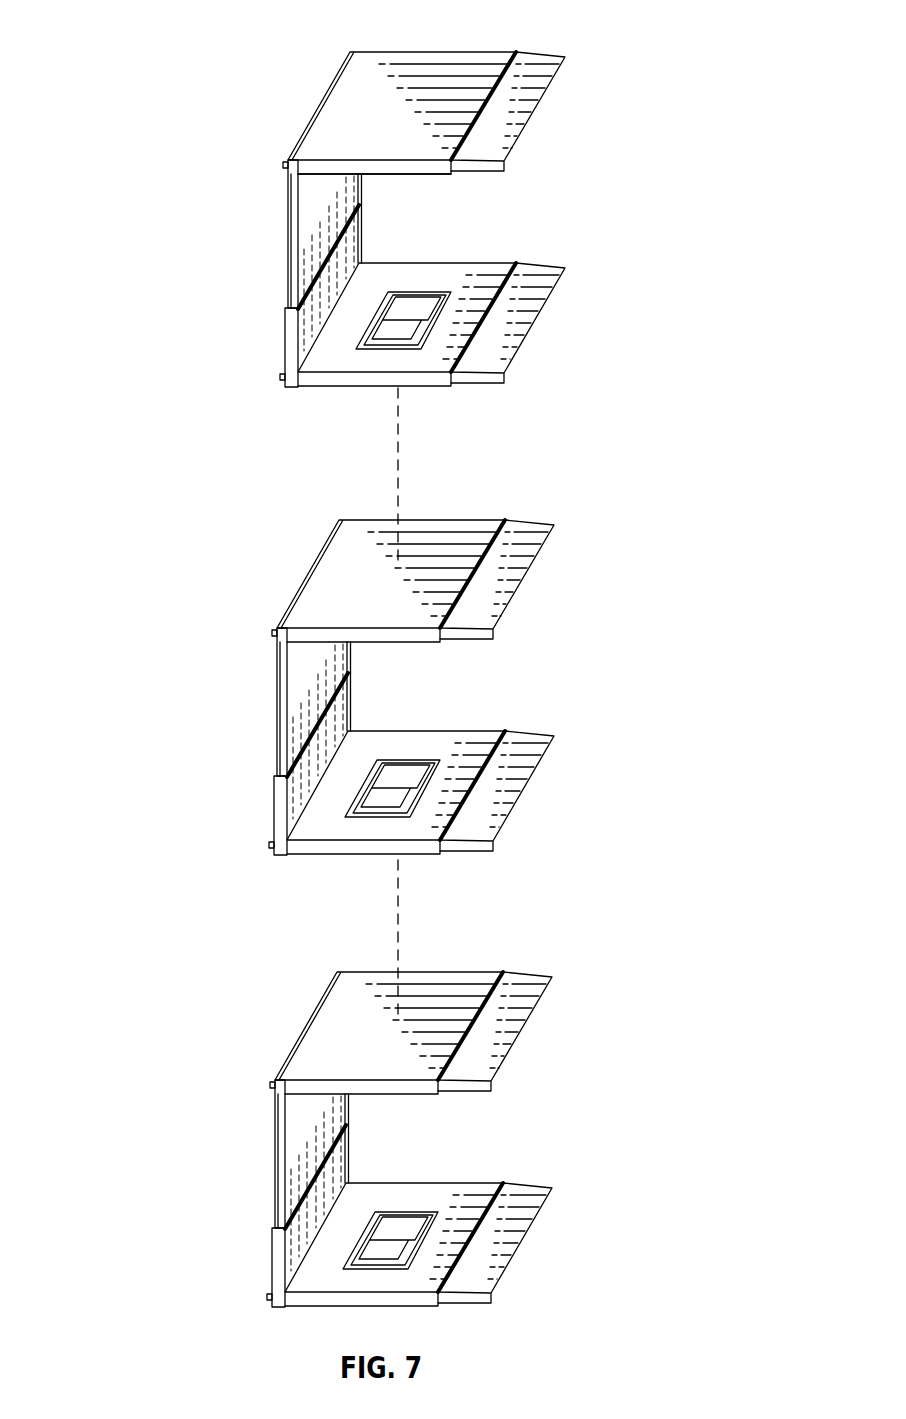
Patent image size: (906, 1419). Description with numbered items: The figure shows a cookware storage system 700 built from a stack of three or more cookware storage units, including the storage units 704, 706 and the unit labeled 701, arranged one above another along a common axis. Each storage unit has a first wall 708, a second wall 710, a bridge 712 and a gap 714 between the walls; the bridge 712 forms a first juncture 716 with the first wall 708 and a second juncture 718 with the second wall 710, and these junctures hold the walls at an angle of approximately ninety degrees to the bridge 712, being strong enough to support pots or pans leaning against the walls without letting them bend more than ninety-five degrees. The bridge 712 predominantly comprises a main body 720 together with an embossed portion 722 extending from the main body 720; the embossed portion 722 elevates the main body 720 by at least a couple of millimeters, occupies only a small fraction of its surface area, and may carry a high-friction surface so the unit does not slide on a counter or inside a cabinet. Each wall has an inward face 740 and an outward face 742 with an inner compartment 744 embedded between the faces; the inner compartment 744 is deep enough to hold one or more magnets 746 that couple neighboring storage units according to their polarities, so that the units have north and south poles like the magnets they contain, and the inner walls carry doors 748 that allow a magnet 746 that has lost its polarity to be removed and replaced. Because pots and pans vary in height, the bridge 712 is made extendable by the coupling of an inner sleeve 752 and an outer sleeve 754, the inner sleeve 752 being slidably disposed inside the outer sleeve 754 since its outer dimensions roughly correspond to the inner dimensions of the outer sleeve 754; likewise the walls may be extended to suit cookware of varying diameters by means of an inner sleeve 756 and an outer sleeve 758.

The cookware storage system 700 is at (135, 74).
The first module 701 is at (383, 214).
The cookware storage unit 704 is at (372, 689).
The cookware storage unit 706 is at (384, 1104).
The first wall 708 is at (402, 89).
The second wall 710 is at (251, 273).
The bridge 712 is at (362, 262).
The gap 714 is at (409, 190).
The first juncture 716 is at (245, 149).
The second juncture 718 is at (244, 399).
The main body 720 is at (241, 741).
The embossed portion 722 is at (233, 619).
The inward face 740 is at (396, 818).
The outward face 742 is at (391, 557).
The inner compartment 744 is at (400, 739).
The magnet 746 is at (433, 745).
The door 748 is at (394, 751).
The inner sleeve 752 is at (238, 1154).
The outer sleeve 754 is at (238, 1267).
The inner sleeve 756 is at (507, 996).
The outer sleeve 758 is at (387, 1028).